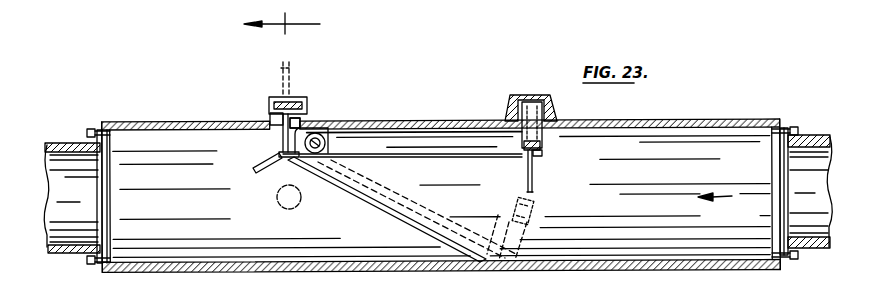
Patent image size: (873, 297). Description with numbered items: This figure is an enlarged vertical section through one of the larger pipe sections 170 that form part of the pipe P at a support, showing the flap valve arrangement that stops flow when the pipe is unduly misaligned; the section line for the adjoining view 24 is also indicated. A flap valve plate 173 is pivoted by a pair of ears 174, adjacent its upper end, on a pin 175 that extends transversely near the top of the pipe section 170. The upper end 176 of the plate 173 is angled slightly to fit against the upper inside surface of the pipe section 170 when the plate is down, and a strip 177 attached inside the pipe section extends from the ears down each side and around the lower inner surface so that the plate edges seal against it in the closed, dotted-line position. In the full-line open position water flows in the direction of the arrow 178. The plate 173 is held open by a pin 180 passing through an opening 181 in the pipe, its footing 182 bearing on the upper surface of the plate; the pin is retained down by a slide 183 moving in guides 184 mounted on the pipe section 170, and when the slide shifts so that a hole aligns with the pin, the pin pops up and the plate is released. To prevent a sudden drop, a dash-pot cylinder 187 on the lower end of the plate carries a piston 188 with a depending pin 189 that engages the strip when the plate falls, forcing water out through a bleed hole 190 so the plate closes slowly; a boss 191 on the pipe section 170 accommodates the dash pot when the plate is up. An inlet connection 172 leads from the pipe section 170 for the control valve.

The pipe section 170 is at (711, 120).
The inlet connection 172 is at (278, 201).
The flap valve 173 is at (406, 157).
The ears 174 is at (325, 135).
The pin 175 is at (327, 145).
The upper end 176 is at (262, 141).
The strip 177 is at (404, 226).
The arrow 178 is at (720, 199).
The pin 180 is at (282, 78).
The opening 181 is at (305, 130).
The footing 182 is at (254, 170).
The slide 183 is at (292, 102).
The guides 184 is at (303, 100).
The dash-pot cylinder 187 is at (545, 136).
The piston 188 is at (539, 157).
The pin 189 is at (533, 187).
The bleed hole 190 is at (530, 102).
The boss 191 is at (550, 102).
The section line 24 is at (264, 23).
The pipe P is at (58, 138).